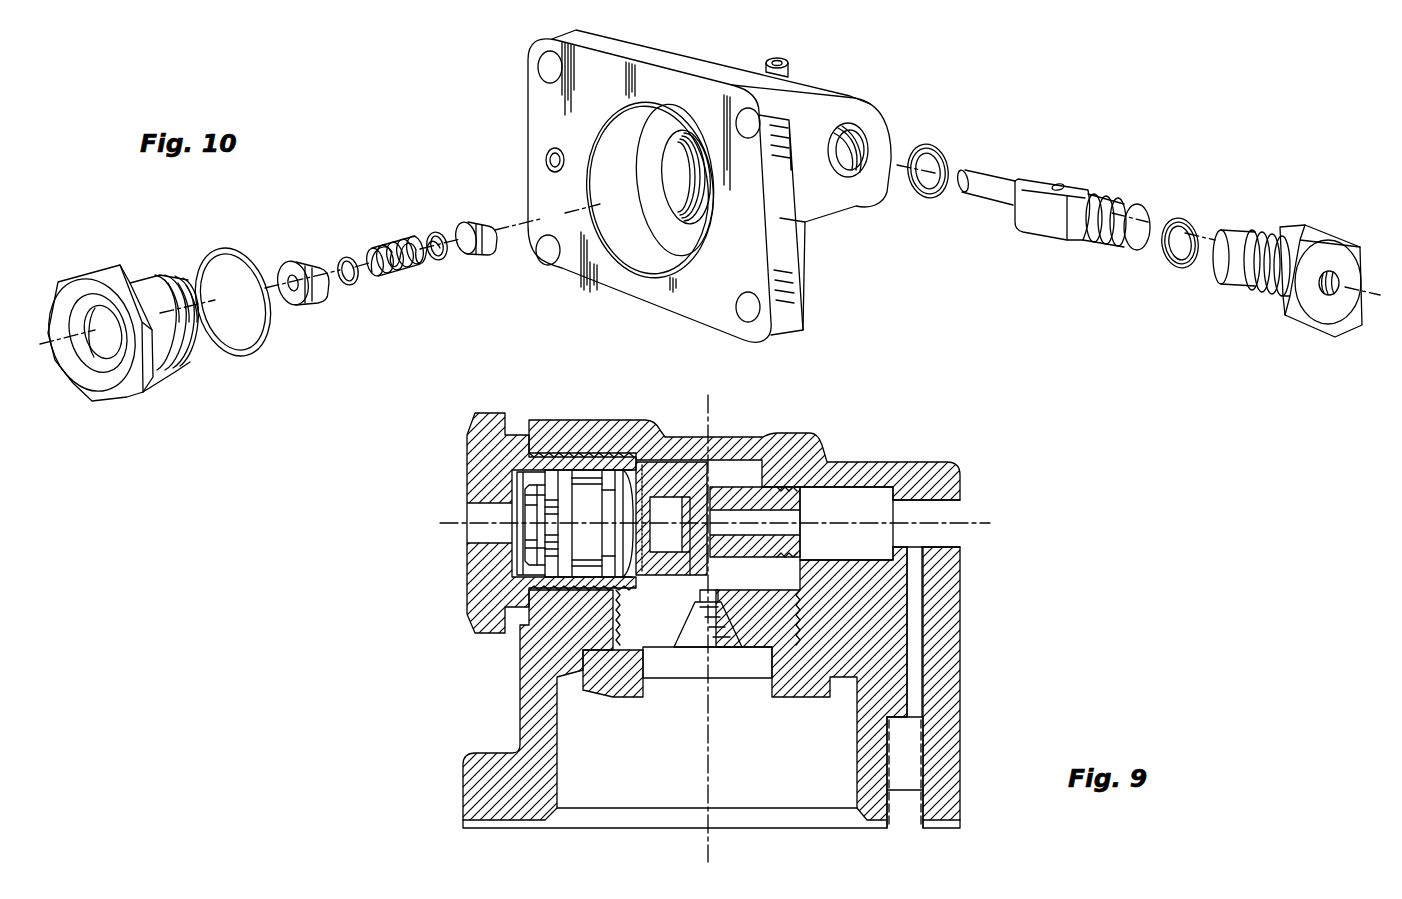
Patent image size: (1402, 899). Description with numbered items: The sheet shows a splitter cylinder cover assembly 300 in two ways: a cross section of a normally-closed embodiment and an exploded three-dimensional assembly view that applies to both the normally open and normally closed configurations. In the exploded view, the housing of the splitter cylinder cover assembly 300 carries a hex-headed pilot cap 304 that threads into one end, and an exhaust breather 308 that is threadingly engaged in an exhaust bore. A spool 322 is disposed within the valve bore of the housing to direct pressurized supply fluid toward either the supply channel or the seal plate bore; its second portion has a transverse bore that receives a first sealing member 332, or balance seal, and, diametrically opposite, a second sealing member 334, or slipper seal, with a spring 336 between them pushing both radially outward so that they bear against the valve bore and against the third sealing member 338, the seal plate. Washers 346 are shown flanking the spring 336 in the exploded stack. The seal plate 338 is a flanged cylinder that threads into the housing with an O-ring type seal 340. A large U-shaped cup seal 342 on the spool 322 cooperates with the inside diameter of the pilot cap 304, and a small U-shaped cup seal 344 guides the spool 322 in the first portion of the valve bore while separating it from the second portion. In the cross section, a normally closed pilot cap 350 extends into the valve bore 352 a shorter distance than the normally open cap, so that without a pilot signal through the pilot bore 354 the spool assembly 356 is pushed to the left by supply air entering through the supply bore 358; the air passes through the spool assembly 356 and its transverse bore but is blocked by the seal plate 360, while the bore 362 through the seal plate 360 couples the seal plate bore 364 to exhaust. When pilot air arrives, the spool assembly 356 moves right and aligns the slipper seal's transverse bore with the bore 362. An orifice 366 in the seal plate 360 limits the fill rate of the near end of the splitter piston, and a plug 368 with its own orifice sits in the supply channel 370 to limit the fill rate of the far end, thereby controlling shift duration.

In FIG. 10, the splitter cylinder cover assembly 300 is at (822, 335).
In FIG. 10, the pilot cap 304 is at (1250, 300).
In FIG. 10, the exhaust breather 308 is at (790, 66).
In FIG. 10, the spool 322 is at (1060, 240).
In FIG. 10, the first sealing member 332 is at (478, 228).
In FIG. 10, the second sealing member 334 is at (318, 300).
In FIG. 10, the spring 336 is at (405, 268).
In FIG. 10, the third sealing member 338 is at (150, 393).
In FIG. 10, the seal 340 is at (258, 350).
In FIG. 10, the cup seal 342 is at (1172, 268).
In FIG. 10, the cup seal 344 is at (918, 195).
In FIG. 10, the washer 346 is at (352, 285).
In FIG. 9, the normally closed pilot cap 350 is at (466, 428).
In FIG. 9, the valve bore 352 is at (858, 503).
In FIG. 9, the pilot bore 354 is at (490, 530).
In FIG. 9, the spool assembly 356 is at (748, 478).
In FIG. 9, the supply bore 358 is at (935, 523).
In FIG. 9, the seal plate 360 is at (605, 698).
In FIG. 9, the bore 362 is at (727, 662).
In FIG. 9, the seal plate bore 364 is at (805, 782).
In FIG. 9, the orifice 366 is at (705, 633).
In FIG. 9, the plug 368 is at (912, 805).
In FIG. 9, the supply channel 370 is at (903, 768).